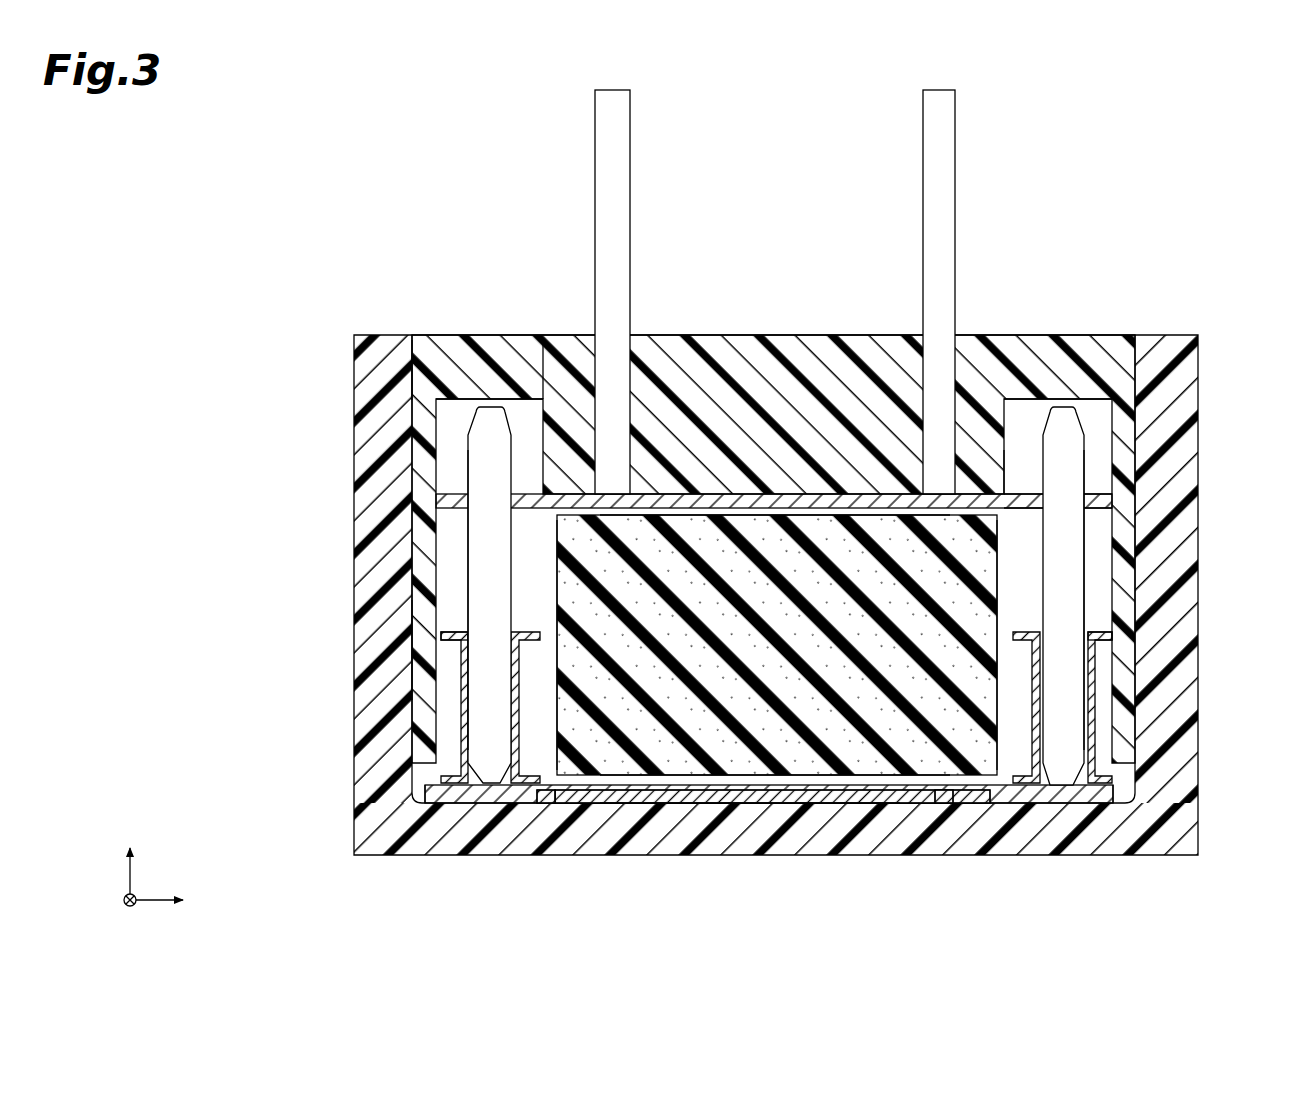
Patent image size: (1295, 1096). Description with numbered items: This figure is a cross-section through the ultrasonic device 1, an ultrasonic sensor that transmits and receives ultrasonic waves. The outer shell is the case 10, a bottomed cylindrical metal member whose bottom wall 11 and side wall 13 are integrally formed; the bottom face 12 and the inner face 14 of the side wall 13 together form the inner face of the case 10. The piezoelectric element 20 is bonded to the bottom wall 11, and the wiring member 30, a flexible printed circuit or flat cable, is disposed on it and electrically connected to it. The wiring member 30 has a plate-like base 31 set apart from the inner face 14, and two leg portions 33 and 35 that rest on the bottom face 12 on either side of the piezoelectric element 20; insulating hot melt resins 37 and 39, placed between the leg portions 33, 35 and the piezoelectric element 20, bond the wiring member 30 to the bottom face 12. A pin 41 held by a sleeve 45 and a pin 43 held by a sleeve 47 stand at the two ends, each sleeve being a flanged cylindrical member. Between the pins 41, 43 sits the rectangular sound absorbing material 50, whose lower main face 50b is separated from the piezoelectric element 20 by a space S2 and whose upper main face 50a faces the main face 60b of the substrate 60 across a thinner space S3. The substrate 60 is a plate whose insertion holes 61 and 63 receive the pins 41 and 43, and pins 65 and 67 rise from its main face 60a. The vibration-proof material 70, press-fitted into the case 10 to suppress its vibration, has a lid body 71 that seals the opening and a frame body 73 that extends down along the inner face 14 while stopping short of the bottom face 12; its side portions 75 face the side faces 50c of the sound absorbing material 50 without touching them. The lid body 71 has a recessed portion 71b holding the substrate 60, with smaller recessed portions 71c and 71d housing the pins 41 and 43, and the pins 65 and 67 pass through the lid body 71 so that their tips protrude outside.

The ultrasonic device 1 is at (314, 165).
The case 10 is at (765, 611).
The bottom wall 11 is at (905, 857).
The bottom face 12 is at (1023, 800).
The side wall 13 is at (352, 574).
The inner face 14 is at (428, 412).
The piezoelectric element 20 is at (823, 812).
The wiring member 30 is at (854, 839).
The base 31 is at (625, 805).
The leg portion 33 is at (475, 812).
The leg portion 35 is at (1050, 812).
The hot melt resin 37 is at (562, 805).
The hot melt resin 39 is at (955, 805).
The pin 41 is at (487, 452).
The pin 43 is at (1072, 438).
The sleeve 45 is at (462, 717).
The sleeve 47 is at (1090, 742).
The sound absorbing material 50 is at (762, 574).
The main face 50a is at (710, 520).
The main face 50b is at (697, 780).
The side face 50c is at (557, 535).
The substrate 60 is at (865, 400).
The main face 60a is at (1105, 490).
The main face 60b is at (1100, 510).
The insertion hole 61 is at (395, 514).
The insertion hole 63 is at (1145, 515).
The pin 65 is at (594, 118).
The pin 67 is at (957, 125).
The vibration-proof material 70 is at (761, 516).
The lid body 71 is at (568, 335).
The recessed portion 71b is at (1043, 553).
The recessed portion 71c is at (463, 402).
The recessed portion 71d is at (1100, 407).
The frame body 73 is at (404, 667).
The side portion 75 is at (440, 634).
The space S2 is at (757, 805).
The space S3 is at (752, 515).